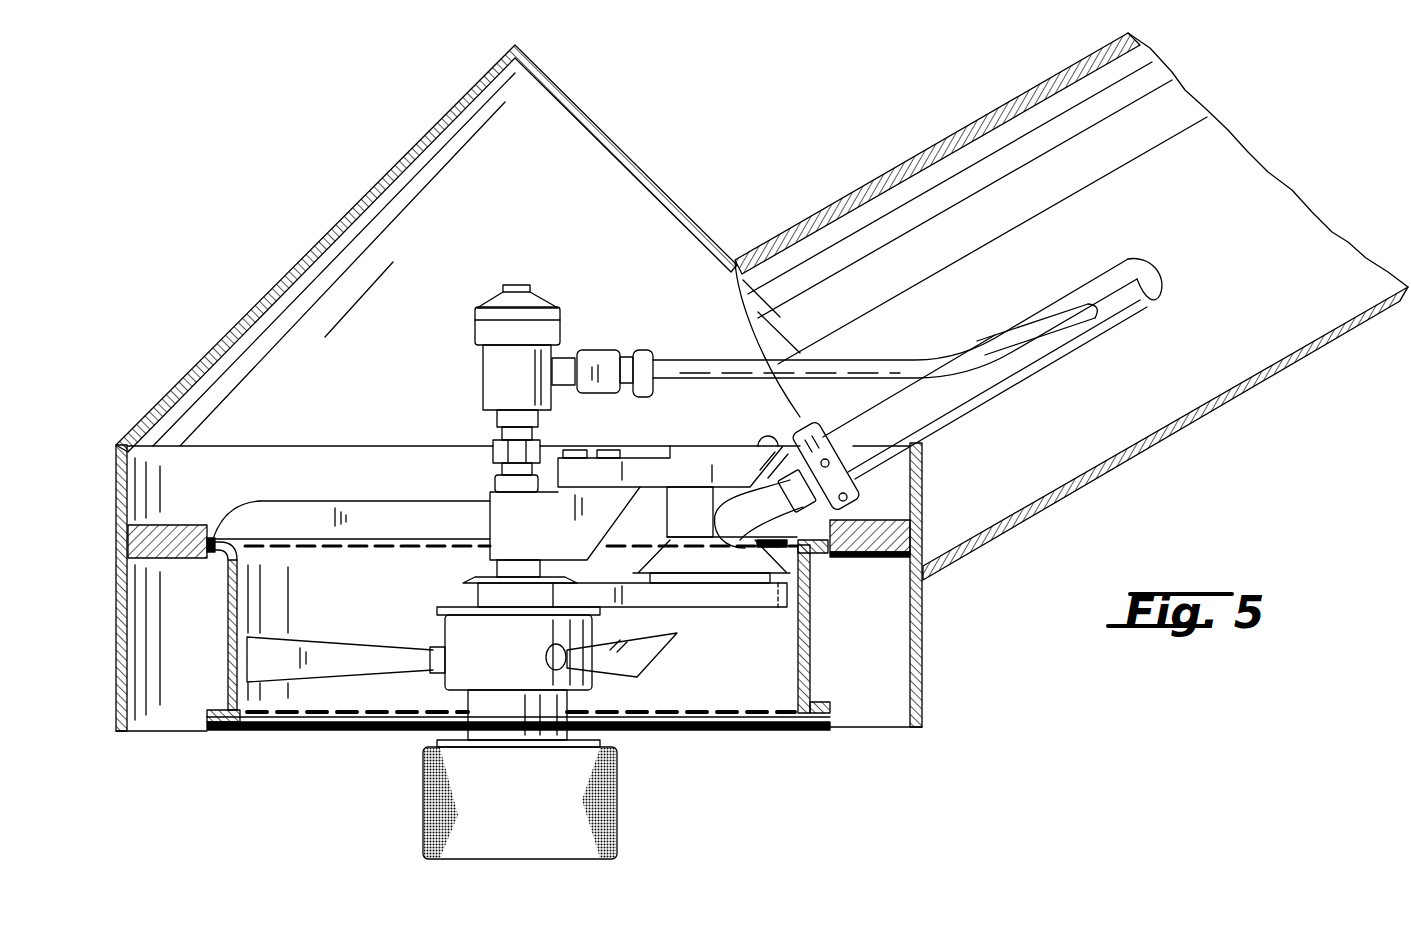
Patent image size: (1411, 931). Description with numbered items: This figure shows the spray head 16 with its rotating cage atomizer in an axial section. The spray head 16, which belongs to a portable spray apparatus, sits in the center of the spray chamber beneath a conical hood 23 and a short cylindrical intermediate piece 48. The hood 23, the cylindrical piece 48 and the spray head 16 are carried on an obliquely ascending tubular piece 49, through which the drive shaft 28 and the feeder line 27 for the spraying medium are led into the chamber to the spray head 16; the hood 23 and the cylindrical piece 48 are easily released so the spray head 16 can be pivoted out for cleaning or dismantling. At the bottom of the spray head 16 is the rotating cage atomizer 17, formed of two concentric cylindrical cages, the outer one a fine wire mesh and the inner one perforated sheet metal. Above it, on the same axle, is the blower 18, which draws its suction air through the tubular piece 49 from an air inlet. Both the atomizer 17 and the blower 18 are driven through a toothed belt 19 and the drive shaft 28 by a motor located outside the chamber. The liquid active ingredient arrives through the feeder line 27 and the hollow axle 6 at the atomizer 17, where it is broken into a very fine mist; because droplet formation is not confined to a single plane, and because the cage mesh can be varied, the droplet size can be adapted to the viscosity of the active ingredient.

The hollow axle 6 is at (508, 433).
The spray head 16 is at (752, 112).
The rotating cage atomizer 17 is at (617, 798).
The blower 18 is at (338, 658).
The toothed belt 19 is at (728, 595).
The conical hood 23 is at (312, 253).
The feeder line 27 is at (893, 365).
The drive shaft 28 is at (1100, 290).
The cylindrical intermediate piece 48 is at (922, 690).
The tubular piece 49 is at (1165, 432).